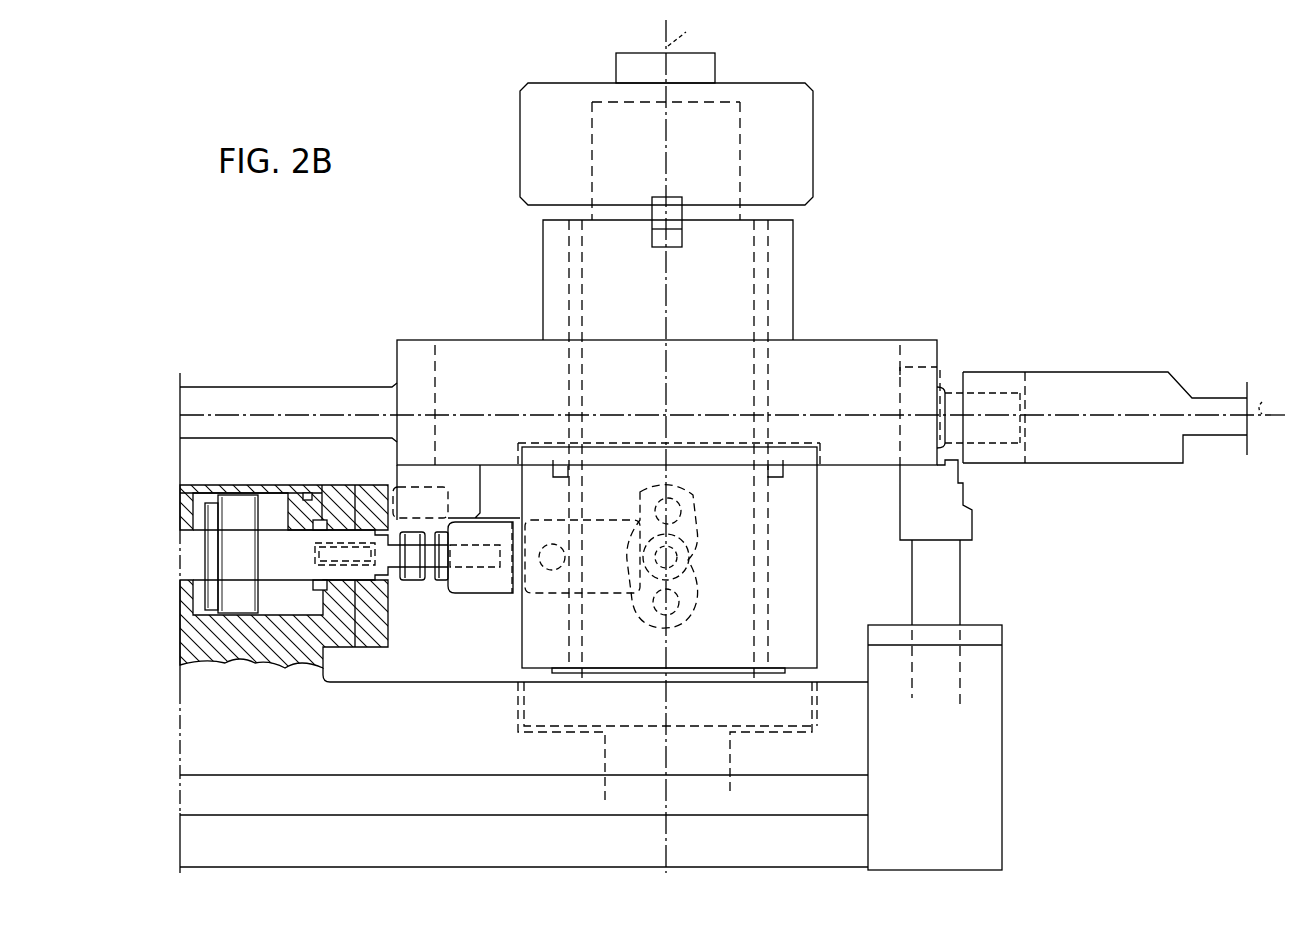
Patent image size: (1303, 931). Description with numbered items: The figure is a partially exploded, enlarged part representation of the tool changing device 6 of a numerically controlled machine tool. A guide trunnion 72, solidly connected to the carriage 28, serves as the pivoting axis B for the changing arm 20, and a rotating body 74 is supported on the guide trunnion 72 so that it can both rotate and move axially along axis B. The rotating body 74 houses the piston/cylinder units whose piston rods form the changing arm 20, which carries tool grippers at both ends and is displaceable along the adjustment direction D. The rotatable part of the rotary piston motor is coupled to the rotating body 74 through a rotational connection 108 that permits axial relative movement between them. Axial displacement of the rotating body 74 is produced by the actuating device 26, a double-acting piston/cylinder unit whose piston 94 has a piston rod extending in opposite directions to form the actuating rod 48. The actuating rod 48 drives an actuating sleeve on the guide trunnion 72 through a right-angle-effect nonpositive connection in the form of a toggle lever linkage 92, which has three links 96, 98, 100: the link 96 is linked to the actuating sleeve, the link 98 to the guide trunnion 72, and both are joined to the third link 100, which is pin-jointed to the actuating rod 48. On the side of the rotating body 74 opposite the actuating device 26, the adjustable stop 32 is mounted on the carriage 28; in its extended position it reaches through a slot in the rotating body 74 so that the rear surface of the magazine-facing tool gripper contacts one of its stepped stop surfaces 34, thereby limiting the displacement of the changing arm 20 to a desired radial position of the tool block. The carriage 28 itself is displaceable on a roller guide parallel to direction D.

The tool changing device 6 is at (705, 446).
The changing arm 20 is at (320, 384).
The actuating device 26 is at (233, 478).
The support body 28 is at (192, 747).
The adjustable stop 32 is at (986, 580).
The stepped stop surfaces 34 is at (967, 505).
The actuating rod 48 is at (285, 540).
The guide trunnion 72 is at (730, 214).
The rotating body 74 is at (843, 356).
The toggle lever linkage 92 is at (650, 634).
The piston 94 is at (234, 600).
The link 96 is at (690, 502).
The link 98 is at (690, 612).
The third link 100 is at (598, 536).
The rotational connection 108 is at (646, 231).